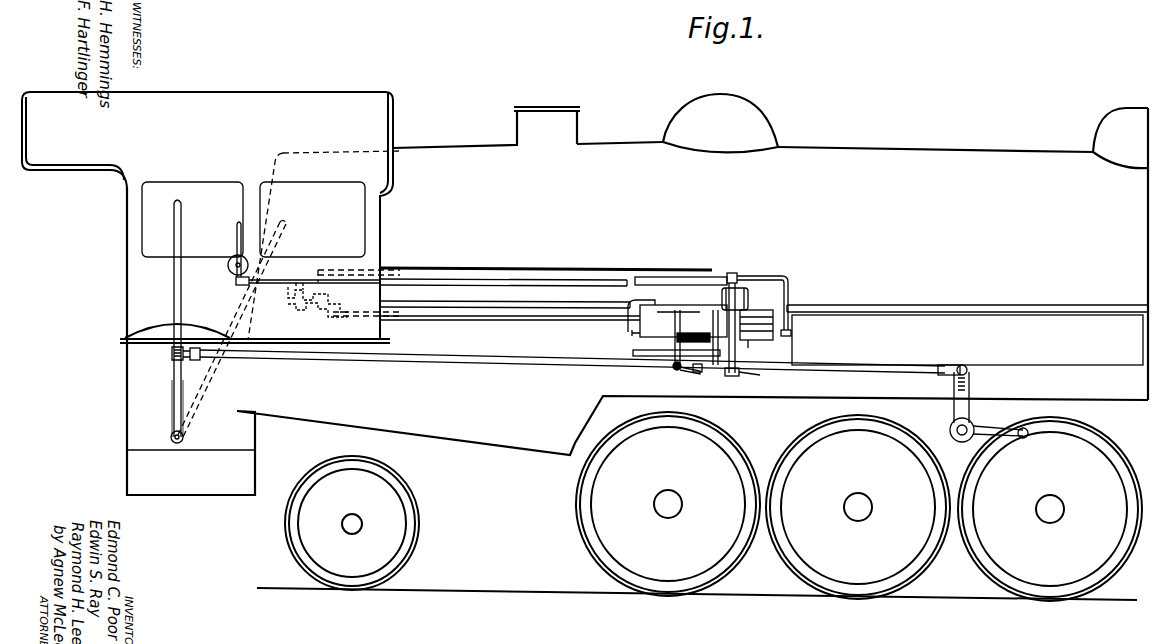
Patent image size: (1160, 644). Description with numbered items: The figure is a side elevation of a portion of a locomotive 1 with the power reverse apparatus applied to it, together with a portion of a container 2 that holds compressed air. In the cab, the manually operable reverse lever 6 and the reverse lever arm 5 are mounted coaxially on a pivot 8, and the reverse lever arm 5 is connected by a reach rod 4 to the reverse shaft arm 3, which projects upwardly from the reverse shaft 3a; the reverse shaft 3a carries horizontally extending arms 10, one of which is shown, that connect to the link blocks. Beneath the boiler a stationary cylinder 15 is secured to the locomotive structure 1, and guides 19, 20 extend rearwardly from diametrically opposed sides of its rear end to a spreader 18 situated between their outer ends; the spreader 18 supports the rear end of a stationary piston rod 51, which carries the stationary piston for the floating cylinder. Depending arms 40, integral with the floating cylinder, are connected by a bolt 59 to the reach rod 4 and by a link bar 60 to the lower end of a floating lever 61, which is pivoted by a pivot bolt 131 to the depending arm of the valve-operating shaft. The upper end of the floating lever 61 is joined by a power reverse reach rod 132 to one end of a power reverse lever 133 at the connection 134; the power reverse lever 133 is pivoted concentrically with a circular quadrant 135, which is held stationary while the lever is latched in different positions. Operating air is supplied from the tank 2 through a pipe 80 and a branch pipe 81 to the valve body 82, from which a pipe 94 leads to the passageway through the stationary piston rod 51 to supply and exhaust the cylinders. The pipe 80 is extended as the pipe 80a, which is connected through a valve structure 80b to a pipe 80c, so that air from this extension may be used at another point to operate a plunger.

The locomotive 1 is at (637, 294).
The container 2 is at (967, 335).
The reverse shaft arm 3 is at (952, 410).
The reverse shaft 3a is at (974, 441).
The reach rod 4 is at (532, 366).
The reverse lever arm 5 is at (172, 388).
The reverse lever 6 is at (182, 210).
The pivot 8 is at (184, 437).
The horizontally extending arm 10 is at (996, 430).
The cylinder 15 is at (748, 342).
The spreader 18 is at (631, 333).
The guide 19 is at (657, 312).
The guide 20 is at (650, 356).
The depending arm 40 is at (675, 368).
The stationary piston rod 51 is at (643, 340).
The bolt 59 is at (695, 373).
The link bar 60 is at (729, 373).
The floating lever 61 is at (740, 366).
The pipe 80 is at (762, 278).
The pipe extension 80a is at (703, 274).
The valve structure 80b is at (313, 304).
The pipe 80c is at (510, 325).
The branch pipe 81 is at (733, 272).
The valve body 82 is at (748, 300).
The pipe 94 is at (655, 312).
The pivot bolt 131 is at (758, 325).
The power reverse reach rod 132 is at (508, 287).
The power reverse lever 133 is at (237, 240).
The connection 134 is at (236, 282).
The circular quadrant 135 is at (228, 266).